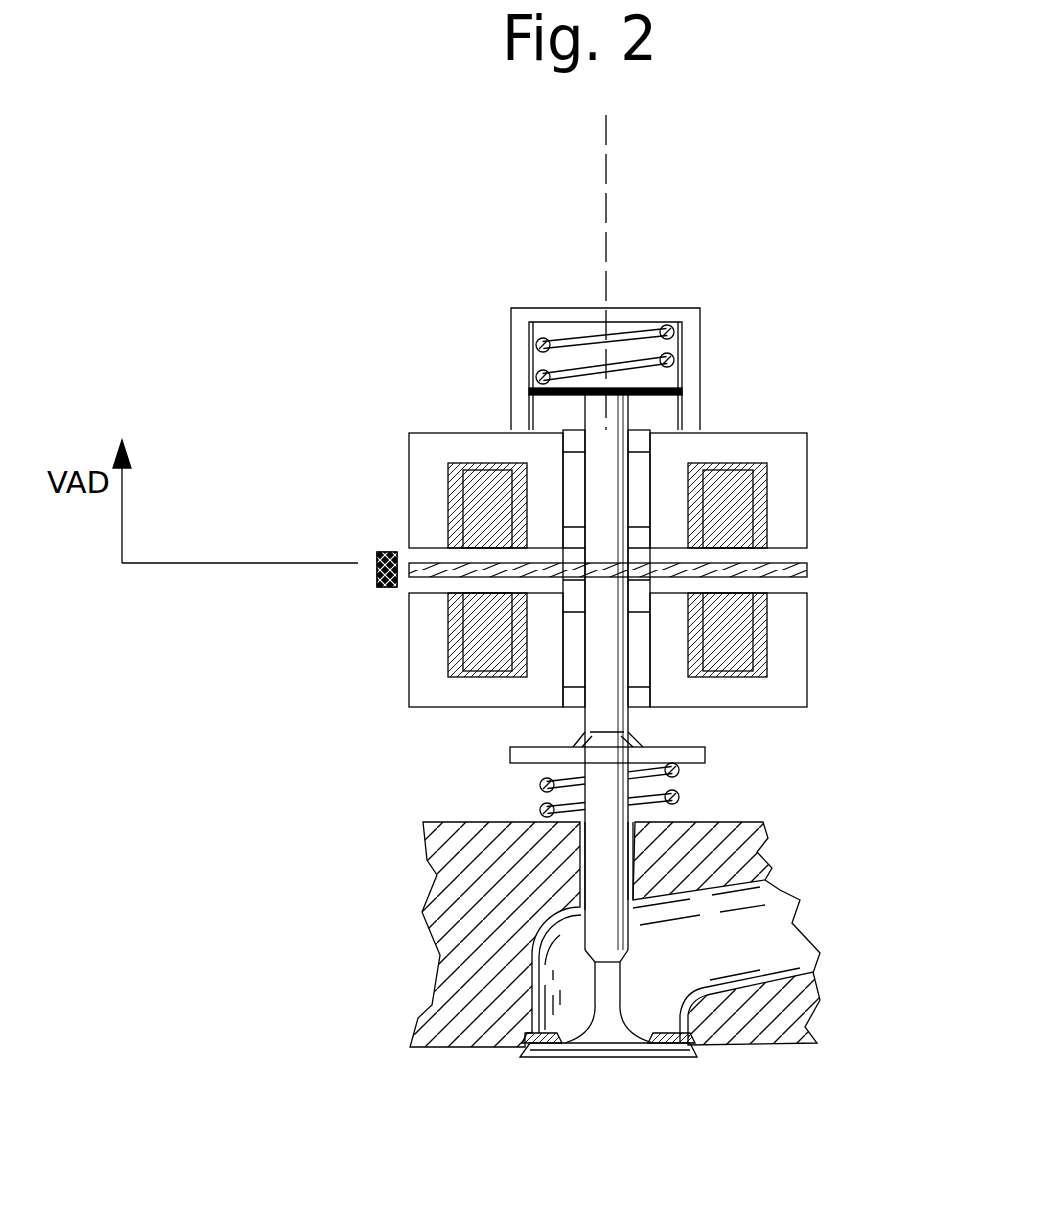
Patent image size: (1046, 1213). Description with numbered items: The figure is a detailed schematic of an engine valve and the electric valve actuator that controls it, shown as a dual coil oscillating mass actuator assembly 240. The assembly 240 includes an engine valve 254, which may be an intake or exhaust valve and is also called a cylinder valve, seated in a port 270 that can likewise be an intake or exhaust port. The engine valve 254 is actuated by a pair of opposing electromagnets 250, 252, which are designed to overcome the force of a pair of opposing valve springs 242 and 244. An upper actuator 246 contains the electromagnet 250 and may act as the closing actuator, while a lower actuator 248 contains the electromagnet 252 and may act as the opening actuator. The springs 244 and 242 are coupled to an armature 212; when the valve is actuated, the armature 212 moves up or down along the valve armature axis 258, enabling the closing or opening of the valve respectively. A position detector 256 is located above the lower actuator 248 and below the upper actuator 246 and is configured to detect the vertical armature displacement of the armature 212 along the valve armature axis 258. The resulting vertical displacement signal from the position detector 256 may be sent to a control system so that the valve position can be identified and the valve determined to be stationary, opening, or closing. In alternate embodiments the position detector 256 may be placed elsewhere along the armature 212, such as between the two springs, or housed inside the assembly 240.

The armature 212 is at (620, 990).
The dual coil oscillating mass actuator assembly 240 is at (682, 569).
The valve spring 242 is at (637, 332).
The valve spring 244 is at (680, 795).
The upper actuator 246 is at (678, 349).
The lower actuator 248 is at (786, 752).
The electromagnet 250 is at (777, 463).
The electromagnet 252 is at (777, 682).
The engine valve 254 is at (312, 827).
The position detector 256 is at (373, 576).
The valve armature axis 258 is at (605, 200).
The port 270 is at (780, 940).